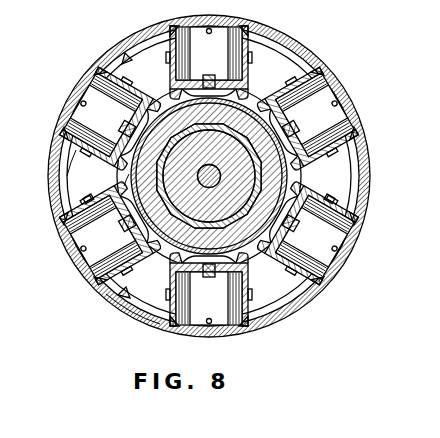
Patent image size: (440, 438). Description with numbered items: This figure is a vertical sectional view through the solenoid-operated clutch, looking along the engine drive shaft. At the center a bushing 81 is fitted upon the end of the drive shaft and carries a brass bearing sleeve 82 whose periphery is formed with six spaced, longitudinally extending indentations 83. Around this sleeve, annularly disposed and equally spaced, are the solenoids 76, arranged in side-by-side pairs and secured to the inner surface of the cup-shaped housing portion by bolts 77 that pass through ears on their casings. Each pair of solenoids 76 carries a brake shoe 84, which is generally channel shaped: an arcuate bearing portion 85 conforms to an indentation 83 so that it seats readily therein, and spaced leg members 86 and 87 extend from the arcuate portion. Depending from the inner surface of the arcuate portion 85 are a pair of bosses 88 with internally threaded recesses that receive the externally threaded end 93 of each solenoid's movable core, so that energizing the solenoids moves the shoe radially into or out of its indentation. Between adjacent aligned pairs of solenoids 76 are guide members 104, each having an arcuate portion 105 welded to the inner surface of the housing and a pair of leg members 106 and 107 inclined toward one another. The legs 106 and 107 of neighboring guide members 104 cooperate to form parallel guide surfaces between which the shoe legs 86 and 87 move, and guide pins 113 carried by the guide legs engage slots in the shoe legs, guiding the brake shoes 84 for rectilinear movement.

The solenoid 76 is at (322, 98).
The bolt 77 is at (345, 244).
The bushing 81 is at (283, 171).
The bearing sleeve 82 is at (257, 100).
The indentation 83 is at (192, 101).
The brake shoe 84 is at (241, 79).
The arcuate bearing portion 85 is at (114, 171).
The leg member 86 is at (72, 137).
The leg member 87 is at (98, 83).
The boss 88 is at (182, 264).
The externally threaded end 93 is at (273, 250).
The guide member 104 is at (126, 56).
The arcuate portion 105 is at (154, 325).
The leg member 106 is at (188, 25).
The leg member 107 is at (133, 48).
The guide pin 113 is at (88, 196).